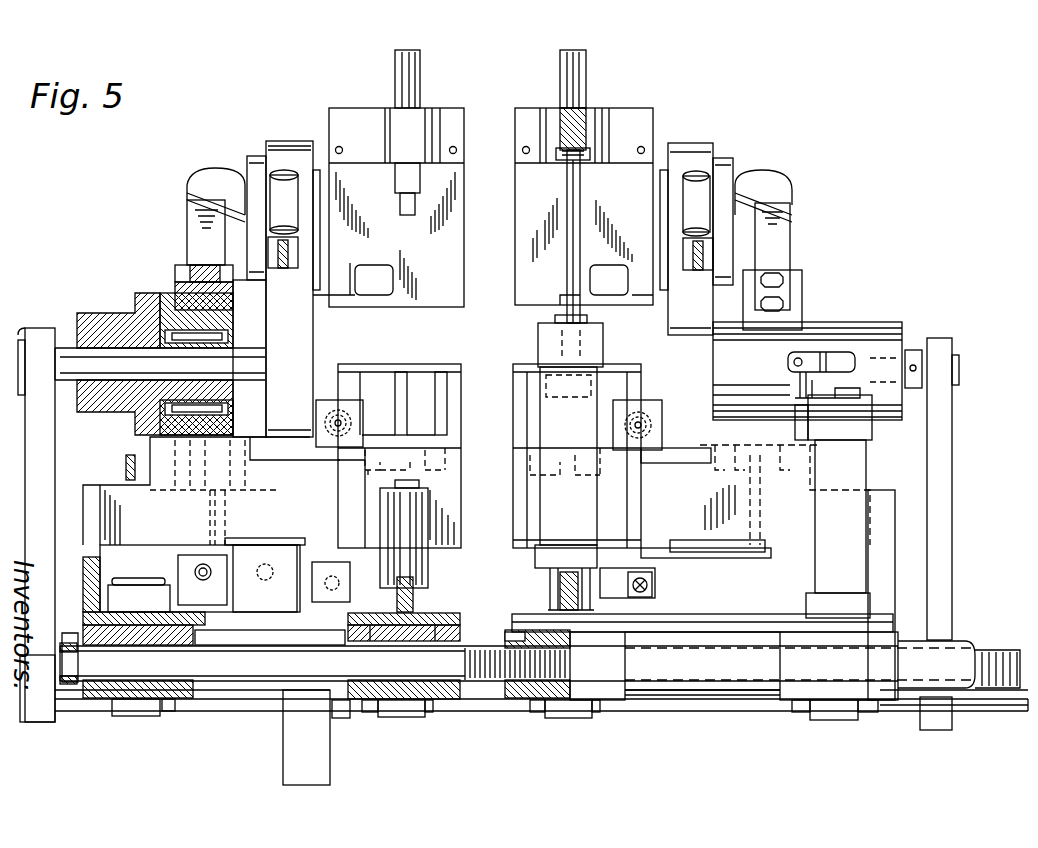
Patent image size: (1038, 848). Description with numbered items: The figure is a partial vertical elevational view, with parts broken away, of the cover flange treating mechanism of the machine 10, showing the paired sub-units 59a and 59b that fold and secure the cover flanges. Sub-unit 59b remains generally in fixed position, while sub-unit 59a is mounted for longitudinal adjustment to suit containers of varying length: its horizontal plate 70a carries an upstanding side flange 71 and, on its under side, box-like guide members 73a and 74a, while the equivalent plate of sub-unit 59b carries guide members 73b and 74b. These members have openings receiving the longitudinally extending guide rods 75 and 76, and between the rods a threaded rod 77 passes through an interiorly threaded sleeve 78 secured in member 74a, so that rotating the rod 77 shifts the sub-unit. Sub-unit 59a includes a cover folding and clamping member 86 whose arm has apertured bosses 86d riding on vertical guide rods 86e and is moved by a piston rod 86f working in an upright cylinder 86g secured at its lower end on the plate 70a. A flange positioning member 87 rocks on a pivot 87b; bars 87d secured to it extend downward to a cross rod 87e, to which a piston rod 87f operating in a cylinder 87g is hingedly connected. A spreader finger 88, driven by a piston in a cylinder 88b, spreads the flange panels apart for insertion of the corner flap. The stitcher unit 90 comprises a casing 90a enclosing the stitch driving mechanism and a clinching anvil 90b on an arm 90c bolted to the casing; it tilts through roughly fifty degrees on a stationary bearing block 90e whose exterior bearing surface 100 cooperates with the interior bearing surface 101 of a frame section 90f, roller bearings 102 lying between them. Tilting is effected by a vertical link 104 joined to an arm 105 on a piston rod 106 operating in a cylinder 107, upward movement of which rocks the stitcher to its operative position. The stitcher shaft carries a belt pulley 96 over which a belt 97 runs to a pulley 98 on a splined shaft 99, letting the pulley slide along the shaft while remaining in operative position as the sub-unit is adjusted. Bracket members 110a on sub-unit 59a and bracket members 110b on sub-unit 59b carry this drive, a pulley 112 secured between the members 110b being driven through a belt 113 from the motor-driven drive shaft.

The apparatus 10 is at (499, 90).
The sub-unit 59a is at (690, 112).
The sub-unit 59b is at (338, 100).
The horizontal plate 70a is at (732, 616).
The upstanding side flange 71 is at (892, 512).
The box-like guide member 73a is at (788, 695).
The box-like guide member 73b is at (190, 700).
The box-like guide member 74a is at (605, 700).
The box-like guide member 74b is at (447, 700).
The guide rod 75 is at (975, 650).
The guide rod 76 is at (70, 633).
The threaded rod 77 is at (484, 652).
The interiorly threaded sleeve 78 is at (527, 700).
The cover folding and clamping member 86 is at (514, 204).
The apertured boss 86d is at (592, 108).
The vertical guide rod 86e is at (578, 78).
The piston rod 86f is at (580, 213).
The upright cylinder 86g is at (598, 350).
The positioning member 87 is at (518, 365).
The pivot 87b is at (725, 452).
The bar 87d is at (758, 480).
The cross rod 87e is at (690, 540).
The piston rod 87f is at (652, 585).
The cylinder 87g is at (335, 560).
The flange spreader finger 88 is at (348, 420).
The cylinder 88b is at (650, 410).
The stitcher unit 90 is at (277, 138).
The casing 90a is at (300, 143).
The clinching anvil 90b is at (115, 380).
The arm 90c is at (195, 207).
The stationary bearing block 90e is at (100, 312).
The frame section 90f is at (180, 265).
The belt pulley 96 is at (25, 328).
The belt 97 is at (42, 468).
The pulley 98 is at (55, 710).
The shaft 99 is at (712, 700).
The exterior bearing surface 100 is at (160, 364).
The interior bearing surface 101 is at (185, 285).
The roller bearings 102 is at (178, 337).
The vertical link 104 is at (800, 378).
The arm 105 is at (845, 355).
The piston rod 106 is at (833, 417).
The cylinder 107 is at (816, 572).
The bracket member 110a is at (572, 718).
The bracket member 110b is at (135, 715).
The pulley 112 is at (340, 718).
The belt 113 is at (283, 770).